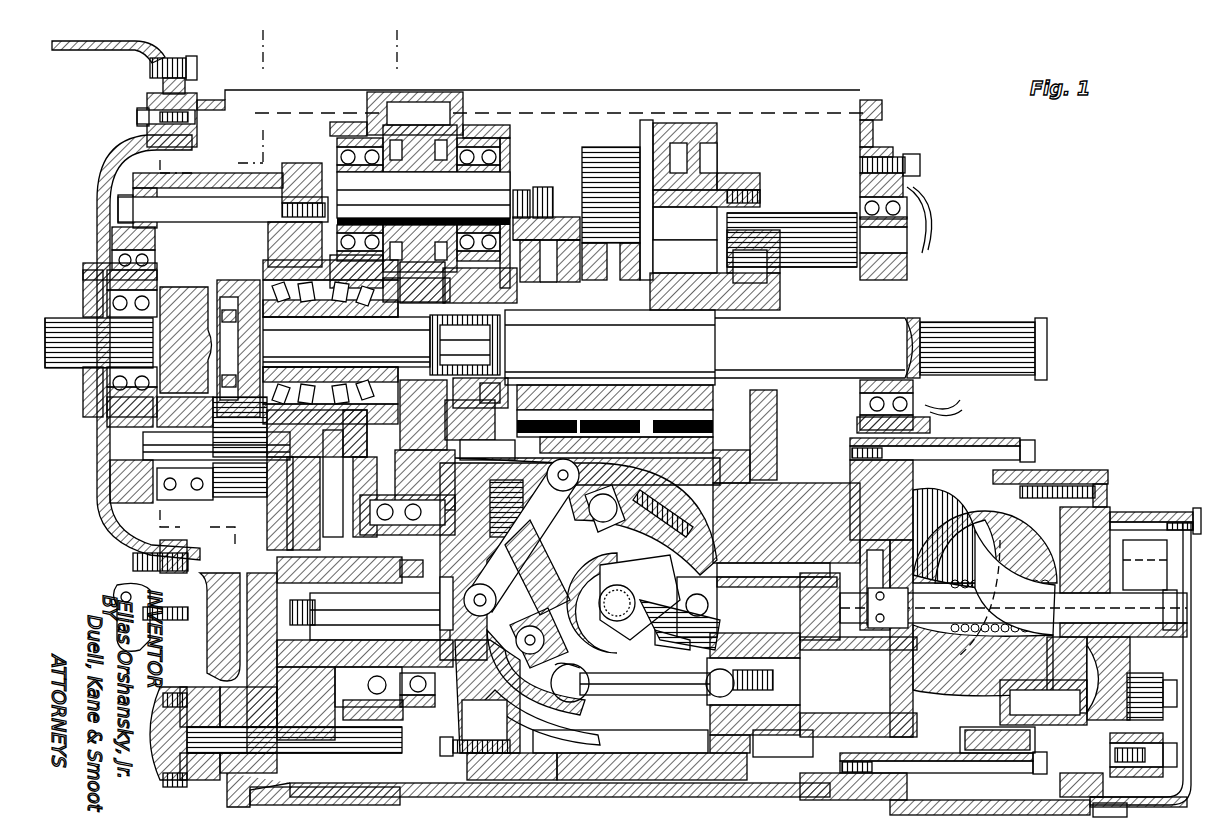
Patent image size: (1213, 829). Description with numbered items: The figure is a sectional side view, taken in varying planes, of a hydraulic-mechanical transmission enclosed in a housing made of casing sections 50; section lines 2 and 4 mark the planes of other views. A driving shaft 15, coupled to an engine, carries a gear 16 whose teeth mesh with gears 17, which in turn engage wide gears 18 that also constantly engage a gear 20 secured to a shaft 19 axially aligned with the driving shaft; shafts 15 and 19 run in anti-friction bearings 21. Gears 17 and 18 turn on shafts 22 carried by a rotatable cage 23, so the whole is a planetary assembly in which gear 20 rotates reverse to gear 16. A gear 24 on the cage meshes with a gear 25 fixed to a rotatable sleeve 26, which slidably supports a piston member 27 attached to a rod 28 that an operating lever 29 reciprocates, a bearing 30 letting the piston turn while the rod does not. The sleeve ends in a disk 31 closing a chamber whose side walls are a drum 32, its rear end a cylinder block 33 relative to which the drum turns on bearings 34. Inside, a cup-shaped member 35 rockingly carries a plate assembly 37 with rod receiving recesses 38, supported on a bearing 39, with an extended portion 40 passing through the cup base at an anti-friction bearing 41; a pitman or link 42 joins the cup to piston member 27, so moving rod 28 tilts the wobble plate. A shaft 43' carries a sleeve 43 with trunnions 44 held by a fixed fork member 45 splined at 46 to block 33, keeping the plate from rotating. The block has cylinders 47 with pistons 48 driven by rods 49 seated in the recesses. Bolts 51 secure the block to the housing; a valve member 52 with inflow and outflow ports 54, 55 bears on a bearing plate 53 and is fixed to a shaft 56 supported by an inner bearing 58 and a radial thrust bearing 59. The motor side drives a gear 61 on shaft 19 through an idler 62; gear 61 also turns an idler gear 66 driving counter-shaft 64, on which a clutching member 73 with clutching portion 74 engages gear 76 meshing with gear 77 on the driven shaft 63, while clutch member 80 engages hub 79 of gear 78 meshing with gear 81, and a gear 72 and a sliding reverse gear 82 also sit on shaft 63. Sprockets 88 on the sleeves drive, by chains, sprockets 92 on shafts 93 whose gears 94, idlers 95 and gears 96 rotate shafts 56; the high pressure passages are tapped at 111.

The section line 2- 2 is at (263, 50).
The section line 4- 4 is at (397, 48).
The driving shaft 15 is at (68, 320).
The gear 16 is at (195, 290).
The gears 17 is at (160, 494).
The gears 18 is at (222, 490).
The shaft 19 is at (381, 345).
The gear 20 is at (238, 292).
The anti-friction bearings 21 is at (100, 280).
The shafts 22 is at (198, 428).
The cage 23 is at (200, 180).
The gear 24 is at (292, 163).
The gear 25 is at (318, 758).
The sleeve 26 is at (270, 545).
The piston member 27 is at (385, 720).
The rod 28 is at (385, 618).
The operating lever 29 is at (118, 585).
The bearing 30 is at (460, 525).
The disk 31 is at (450, 755).
The drum 32 is at (645, 753).
The cylinder block 33 is at (700, 535).
The bearings 34 is at (665, 760).
The cup-shaped member 35 is at (487, 696).
The plate assembly 37 is at (590, 722).
The rod receiving recesses 38 is at (590, 705).
The bearing 39 is at (518, 630).
The extended portion 40 is at (623, 603).
The anti-friction bearing 41 is at (521, 537).
The pitman or link 42 is at (506, 508).
The sleeve 43 is at (676, 620).
The shaft 43' is at (667, 661).
The trunnions 44 is at (632, 607).
The fork member 45 is at (672, 641).
The splining 46 is at (775, 560).
The cylinders 47 is at (858, 687).
The pistons 48 is at (762, 735).
The rods 49 is at (642, 682).
The casing sections 50 is at (135, 150).
The bolts 51 is at (945, 448).
The valve member 52 is at (1120, 515).
The bearing plate 53 is at (897, 787).
The inflow ports 54 is at (975, 650).
The outflow ports 55 is at (1010, 650).
The shaft 56 is at (1013, 612).
The inner bearing 58 is at (822, 693).
The bearing 59 is at (1095, 660).
The gear 61 is at (458, 356).
The idler 62 is at (450, 458).
The driven shaft 63 is at (1005, 306).
The counter-shaft 64 is at (815, 225).
The idler gear 66 is at (425, 130).
The gear 72 is at (545, 225).
The clutching member 73 is at (518, 190).
The clutching portion 74 is at (540, 187).
The gear 76 is at (595, 147).
The gear 77 is at (647, 240).
The gear 78 is at (712, 130).
The clutching portion or hub 79 is at (730, 190).
The clutch member 80 is at (805, 207).
The gear 81 is at (672, 300).
The gear 82 is at (760, 450).
The sprockets 88 is at (218, 646).
The sprockets 92 is at (300, 795).
The shafts 93 is at (370, 758).
The gears 94 is at (1127, 808).
The idlers 95 is at (1160, 680).
The gears 96 is at (1158, 560).
The tap 111 is at (1000, 790).